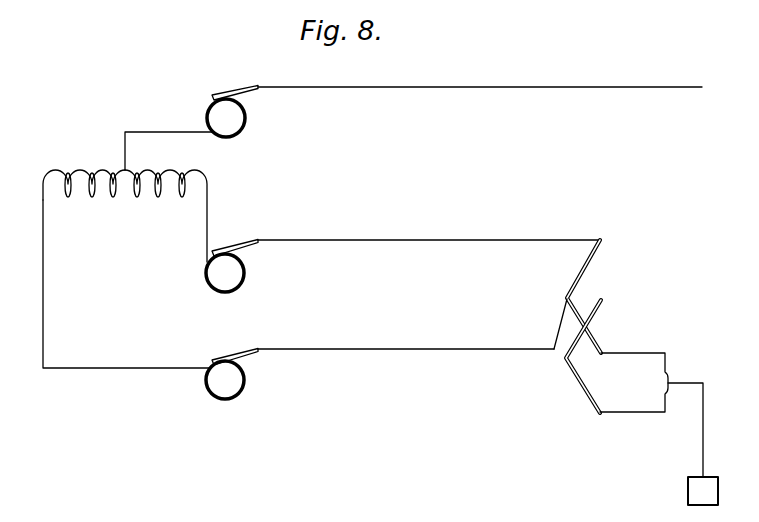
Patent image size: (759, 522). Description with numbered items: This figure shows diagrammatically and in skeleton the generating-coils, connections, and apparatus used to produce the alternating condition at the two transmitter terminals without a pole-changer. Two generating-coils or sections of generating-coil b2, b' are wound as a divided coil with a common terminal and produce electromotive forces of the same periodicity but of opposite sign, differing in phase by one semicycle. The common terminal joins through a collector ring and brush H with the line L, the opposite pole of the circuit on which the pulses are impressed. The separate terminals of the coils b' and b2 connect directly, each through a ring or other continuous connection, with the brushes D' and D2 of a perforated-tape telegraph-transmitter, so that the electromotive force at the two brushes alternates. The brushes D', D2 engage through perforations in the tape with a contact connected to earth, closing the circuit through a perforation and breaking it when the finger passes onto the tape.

The line L is at (480, 77).
The collector ring and brush H is at (226, 118).
The generating-coil b2 is at (83, 168).
The generating-coil b' is at (166, 200).
The brush D' is at (598, 293).
The brush D2 is at (602, 309).